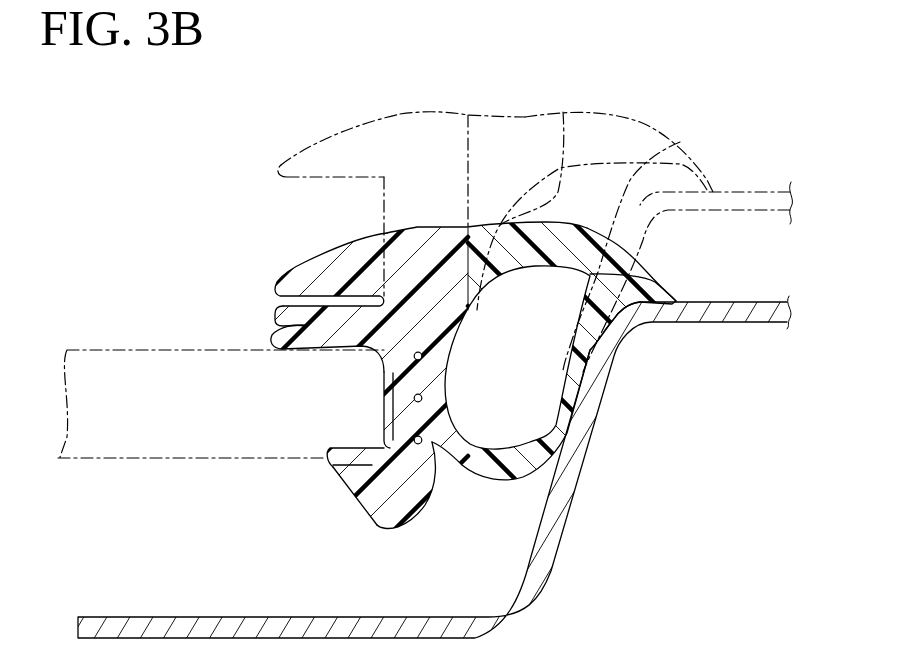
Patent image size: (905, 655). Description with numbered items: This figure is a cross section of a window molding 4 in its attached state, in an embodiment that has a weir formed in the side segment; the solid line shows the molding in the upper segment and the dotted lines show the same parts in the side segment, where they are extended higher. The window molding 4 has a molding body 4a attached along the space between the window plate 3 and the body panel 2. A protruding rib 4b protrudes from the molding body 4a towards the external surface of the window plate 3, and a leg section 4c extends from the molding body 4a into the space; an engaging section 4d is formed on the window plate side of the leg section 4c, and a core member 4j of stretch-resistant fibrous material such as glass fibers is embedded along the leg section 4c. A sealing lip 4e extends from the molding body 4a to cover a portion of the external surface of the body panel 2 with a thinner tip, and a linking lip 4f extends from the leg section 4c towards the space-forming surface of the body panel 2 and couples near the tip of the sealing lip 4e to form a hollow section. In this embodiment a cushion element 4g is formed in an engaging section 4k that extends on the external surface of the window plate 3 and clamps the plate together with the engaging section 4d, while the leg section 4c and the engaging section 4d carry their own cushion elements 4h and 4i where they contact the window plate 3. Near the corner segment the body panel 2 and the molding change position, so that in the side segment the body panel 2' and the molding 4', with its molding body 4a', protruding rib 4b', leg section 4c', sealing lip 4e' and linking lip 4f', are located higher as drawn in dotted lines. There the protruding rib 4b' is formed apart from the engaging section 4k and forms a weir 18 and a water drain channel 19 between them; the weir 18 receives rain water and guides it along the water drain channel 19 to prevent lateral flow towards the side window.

The body panel 2 is at (419, 467).
The body panel (side segment position) 2' is at (687, 277).
The window plate 3 is at (83, 348).
The window molding 4 is at (475, 330).
The window molding (side segment position) 4' is at (590, 120).
The molding body 4a is at (487, 193).
The molding body (side segment position) 4a' is at (457, 74).
The protruding rib 4b is at (296, 269).
The protruding rib (side segment position) 4b' is at (340, 109).
The leg section 4c is at (406, 529).
The leg section (side segment position) 4c' is at (540, 182).
The engaging section 4d is at (350, 493).
The sealing lip 4e is at (621, 241).
The sealing lip (side segment position) 4e' is at (603, 134).
The linking lip 4f is at (537, 422).
The linking lip (side segment position) 4f' is at (676, 232).
The cushion element 4g is at (272, 350).
The cushion element 4h is at (378, 406).
The cushion element 4i is at (328, 448).
The core member 4j is at (419, 444).
The engaging section 4k is at (276, 318).
The weir 18 is at (384, 225).
The water drain channel 19 is at (281, 182).